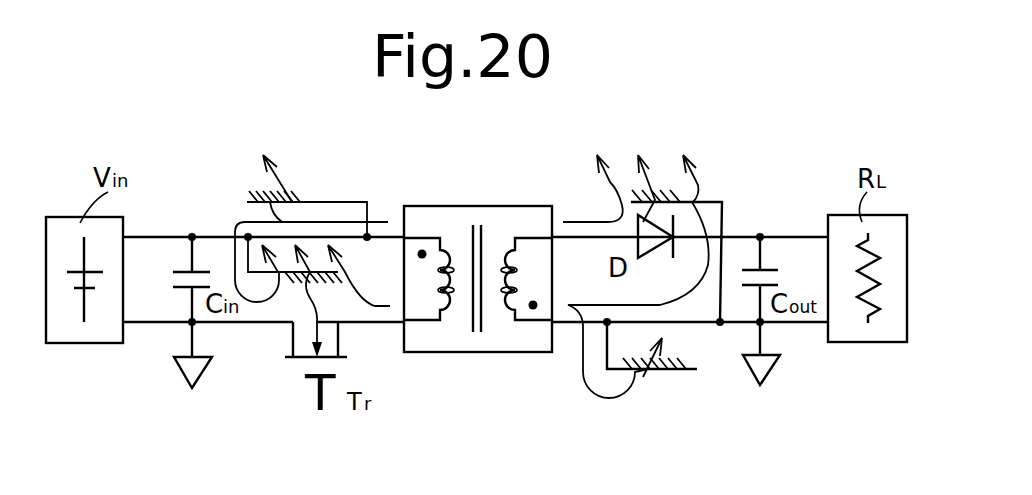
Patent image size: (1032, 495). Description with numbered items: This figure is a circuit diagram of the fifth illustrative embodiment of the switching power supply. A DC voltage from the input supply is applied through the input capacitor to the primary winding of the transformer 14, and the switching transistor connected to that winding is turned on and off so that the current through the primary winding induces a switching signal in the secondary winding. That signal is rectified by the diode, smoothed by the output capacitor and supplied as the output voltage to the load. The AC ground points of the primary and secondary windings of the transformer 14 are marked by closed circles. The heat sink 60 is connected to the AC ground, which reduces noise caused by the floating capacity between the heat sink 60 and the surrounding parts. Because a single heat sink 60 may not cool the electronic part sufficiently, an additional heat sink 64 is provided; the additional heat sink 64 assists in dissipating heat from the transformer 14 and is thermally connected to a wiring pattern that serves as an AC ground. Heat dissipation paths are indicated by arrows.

The transformer 14 is at (468, 340).
The heat sink 60 is at (710, 200).
The additional heat sink 64 is at (668, 372).